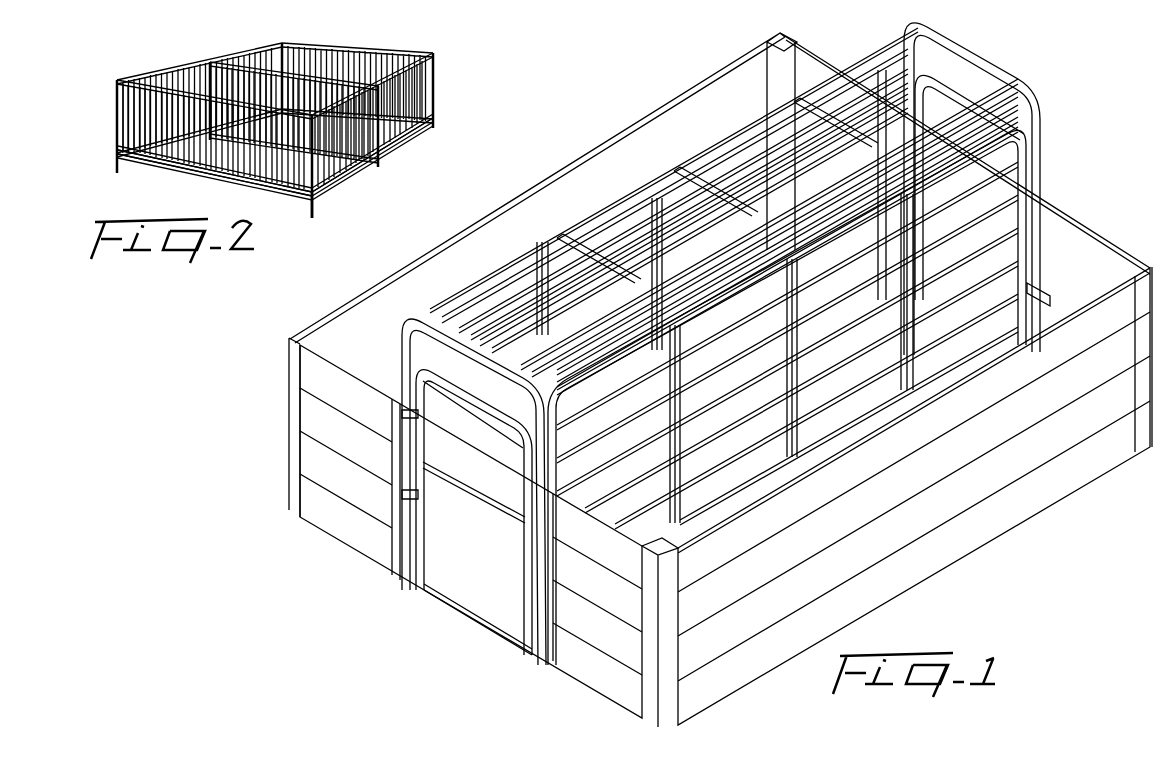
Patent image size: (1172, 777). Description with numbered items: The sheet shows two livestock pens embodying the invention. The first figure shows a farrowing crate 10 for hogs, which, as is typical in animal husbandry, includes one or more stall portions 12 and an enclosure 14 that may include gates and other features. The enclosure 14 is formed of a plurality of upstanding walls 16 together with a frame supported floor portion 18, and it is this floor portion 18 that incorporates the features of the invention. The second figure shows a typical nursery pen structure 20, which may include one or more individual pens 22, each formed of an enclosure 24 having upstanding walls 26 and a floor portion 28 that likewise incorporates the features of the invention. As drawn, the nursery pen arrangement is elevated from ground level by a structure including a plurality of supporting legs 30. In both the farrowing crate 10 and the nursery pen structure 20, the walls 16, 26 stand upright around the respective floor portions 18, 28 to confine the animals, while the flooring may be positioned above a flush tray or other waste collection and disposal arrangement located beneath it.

In FIG. 1, the farrowing crate 10 is at (592, 132).
In FIG. 1, the stall portion 12 is at (958, 40).
In FIG. 1, the enclosure 14 is at (342, 304).
In FIG. 1, the upstanding wall 16 is at (1118, 300).
In FIG. 1, the floor portion 18 is at (455, 592).
In FIG. 2, the nursery pen structure 20 is at (165, 35).
In FIG. 2, the individual pen 22 is at (163, 80).
In FIG. 2, the enclosure 24 is at (436, 86).
In FIG. 2, the upstanding wall 26 is at (343, 148).
In FIG. 2, the floor portion 28 is at (246, 135).
In FIG. 2, the supporting leg 30 is at (313, 208).